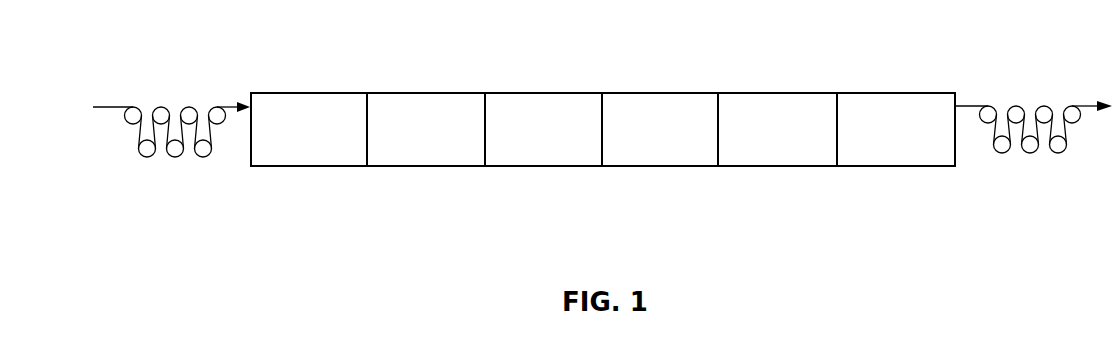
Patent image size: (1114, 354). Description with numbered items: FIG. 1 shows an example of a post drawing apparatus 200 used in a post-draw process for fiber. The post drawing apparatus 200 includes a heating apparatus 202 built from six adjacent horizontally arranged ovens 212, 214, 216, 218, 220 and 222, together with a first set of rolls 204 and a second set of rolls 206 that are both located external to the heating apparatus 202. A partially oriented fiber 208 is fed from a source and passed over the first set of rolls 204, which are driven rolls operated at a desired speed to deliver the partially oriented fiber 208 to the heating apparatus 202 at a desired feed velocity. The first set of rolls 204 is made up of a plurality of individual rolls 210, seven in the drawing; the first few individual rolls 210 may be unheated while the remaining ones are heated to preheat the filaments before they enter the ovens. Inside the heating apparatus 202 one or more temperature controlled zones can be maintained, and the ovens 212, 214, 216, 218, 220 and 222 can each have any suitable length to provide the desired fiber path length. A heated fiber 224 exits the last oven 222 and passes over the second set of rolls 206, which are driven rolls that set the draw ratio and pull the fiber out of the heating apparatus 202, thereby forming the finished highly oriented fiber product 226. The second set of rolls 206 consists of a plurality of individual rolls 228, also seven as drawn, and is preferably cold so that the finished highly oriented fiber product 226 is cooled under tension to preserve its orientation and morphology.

The post drawing apparatus 200 is at (283, 239).
The heating apparatus 202 is at (580, 185).
The first set of rolls 204 is at (177, 88).
The second set of rolls 206 is at (1032, 85).
The partially oriented fiber 208 is at (113, 103).
The individual rolls 210 is at (146, 157).
The horizontal oven 212 is at (312, 92).
The horizontal oven 214 is at (428, 92).
The horizontal oven 216 is at (546, 92).
The horizontal oven 218 is at (661, 92).
The horizontal oven 220 is at (780, 92).
The last oven 222 is at (897, 92).
The heated fiber 224 is at (973, 105).
The finished highly oriented fiber product 226 is at (1093, 103).
The individual rolls 228 is at (1002, 153).